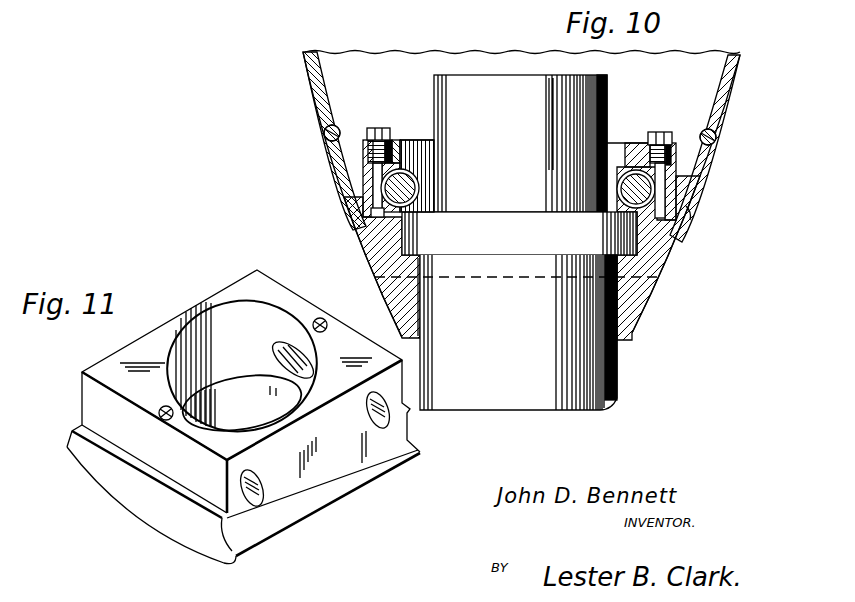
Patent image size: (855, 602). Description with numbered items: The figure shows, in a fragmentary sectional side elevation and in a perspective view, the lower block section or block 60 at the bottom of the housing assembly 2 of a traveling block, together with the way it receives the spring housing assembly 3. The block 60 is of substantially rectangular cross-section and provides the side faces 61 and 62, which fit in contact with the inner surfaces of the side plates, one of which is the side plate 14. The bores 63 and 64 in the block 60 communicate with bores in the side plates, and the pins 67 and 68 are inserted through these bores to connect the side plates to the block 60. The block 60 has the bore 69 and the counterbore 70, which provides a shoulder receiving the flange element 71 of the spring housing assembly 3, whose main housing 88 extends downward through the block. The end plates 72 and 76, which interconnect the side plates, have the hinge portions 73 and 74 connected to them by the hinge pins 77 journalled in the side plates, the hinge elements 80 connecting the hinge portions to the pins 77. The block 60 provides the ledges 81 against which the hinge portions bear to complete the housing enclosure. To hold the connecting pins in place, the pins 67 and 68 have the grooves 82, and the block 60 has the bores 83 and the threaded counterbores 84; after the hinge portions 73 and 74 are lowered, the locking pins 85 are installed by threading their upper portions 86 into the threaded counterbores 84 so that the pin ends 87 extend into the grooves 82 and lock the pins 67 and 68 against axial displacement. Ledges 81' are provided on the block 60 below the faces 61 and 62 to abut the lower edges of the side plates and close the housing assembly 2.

In FIG. 10, the housing assembly 2 is at (372, 99).
In FIG. 10, the spring housing assembly 3 is at (510, 321).
In FIG. 10, the side plate 14 is at (666, 102).
In FIG. 10, the lower block section 60 is at (668, 257).
In FIG. 11, the lower block section 60 is at (238, 276).
In FIG. 11, the side face 61 is at (80, 393).
In FIG. 11, the side face 62 is at (345, 451).
In FIG. 11, the bore 63 is at (262, 487).
In FIG. 11, the bore 64 is at (384, 410).
In FIG. 10, the pin 67 is at (410, 182).
In FIG. 10, the pin 68 is at (630, 168).
In FIG. 10, the bore 69 is at (425, 305).
In FIG. 11, the bore 69 is at (283, 424).
In FIG. 10, the counterbore 70 is at (413, 150).
In FIG. 11, the counterbore 70 is at (265, 361).
In FIG. 10, the flange element 71 is at (546, 237).
In FIG. 10, the end plate 72 is at (338, 173).
In FIG. 10, the hinge portion 73 is at (323, 103).
In FIG. 10, the hinge portion 74 is at (724, 106).
In FIG. 10, the end plate 76 is at (704, 172).
In FIG. 10, the hinge pin 77 is at (716, 138).
In FIG. 10, the hinge element 80 is at (714, 143).
In FIG. 10, the ledge 81 is at (714, 216).
In FIG. 11, the ledge 81 is at (151, 497).
In FIG. 11, the ledge 81' is at (328, 504).
In FIG. 10, the groove 82 is at (419, 190).
In FIG. 10, the bore 83 is at (672, 190).
In FIG. 10, the threaded counterbore 84 is at (668, 150).
In FIG. 11, the threaded counterbore 84 is at (162, 408).
In FIG. 10, the locking pin 85 is at (378, 128).
In FIG. 10, the upper portion 86 is at (388, 148).
In FIG. 10, the pin end 87 is at (374, 181).
In FIG. 10, the main housing 88 is at (474, 367).